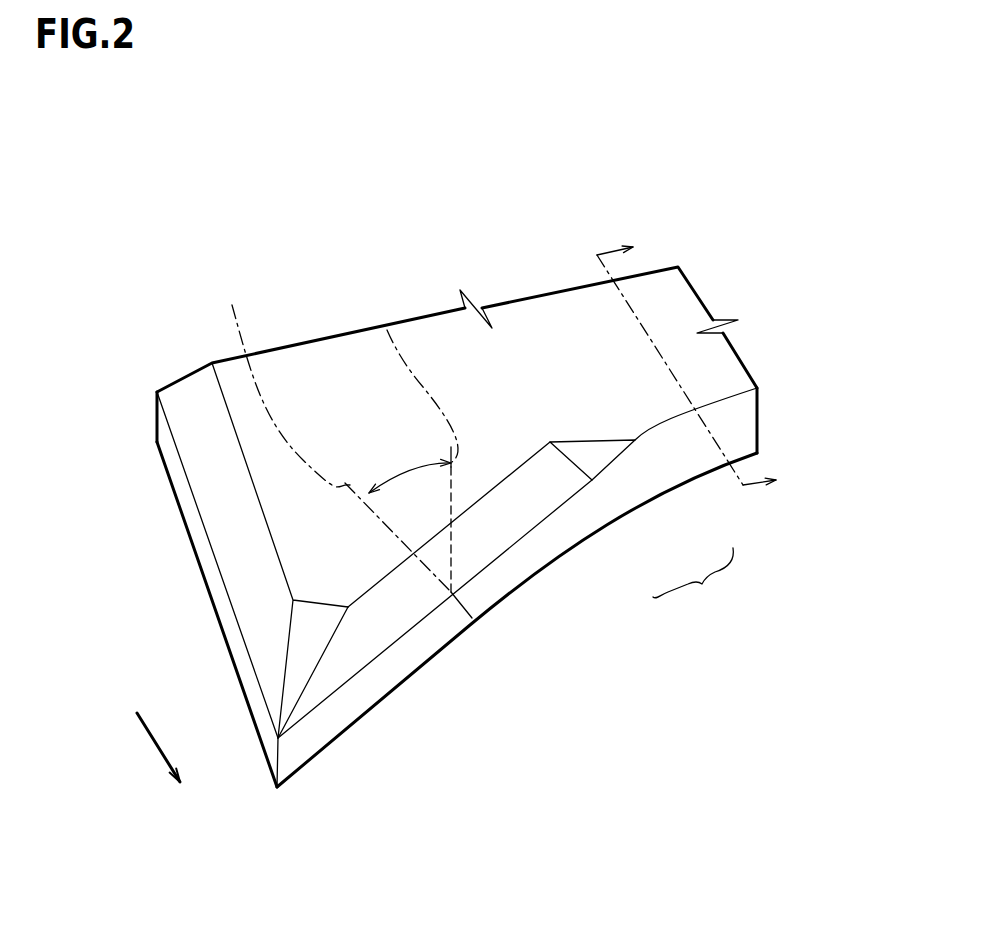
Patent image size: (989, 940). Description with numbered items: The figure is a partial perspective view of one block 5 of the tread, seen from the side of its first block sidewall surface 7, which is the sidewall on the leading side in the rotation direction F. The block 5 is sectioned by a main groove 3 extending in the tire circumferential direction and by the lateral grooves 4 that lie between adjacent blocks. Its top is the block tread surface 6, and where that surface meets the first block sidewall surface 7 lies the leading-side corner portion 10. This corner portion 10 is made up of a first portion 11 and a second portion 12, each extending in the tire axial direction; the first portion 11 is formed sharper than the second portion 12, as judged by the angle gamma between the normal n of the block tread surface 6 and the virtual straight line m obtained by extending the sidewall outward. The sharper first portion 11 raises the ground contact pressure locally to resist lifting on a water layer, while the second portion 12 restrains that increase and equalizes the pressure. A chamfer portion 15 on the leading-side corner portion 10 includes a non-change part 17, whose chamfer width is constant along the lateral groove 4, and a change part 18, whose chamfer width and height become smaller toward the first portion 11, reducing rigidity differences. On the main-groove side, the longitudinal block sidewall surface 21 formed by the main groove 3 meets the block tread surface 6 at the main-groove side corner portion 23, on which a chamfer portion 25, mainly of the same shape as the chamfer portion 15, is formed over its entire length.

The main groove 3 is at (183, 612).
The lateral groove 4 is at (484, 679).
The block 5 is at (775, 332).
The block tread surface 6 is at (443, 373).
The first block sidewall surface 7 is at (733, 420).
The leading-side corner portion 10 is at (693, 583).
The first portion 11 is at (672, 427).
The second portion 12 is at (563, 505).
The chamfer portion 15 is at (335, 663).
The non-change part 17 is at (498, 525).
The change part 18 is at (590, 458).
The longitudinal block sidewall surface 21 is at (175, 468).
The main-groove side corner portion 23 is at (155, 377).
The chamfer portion 25 is at (238, 542).